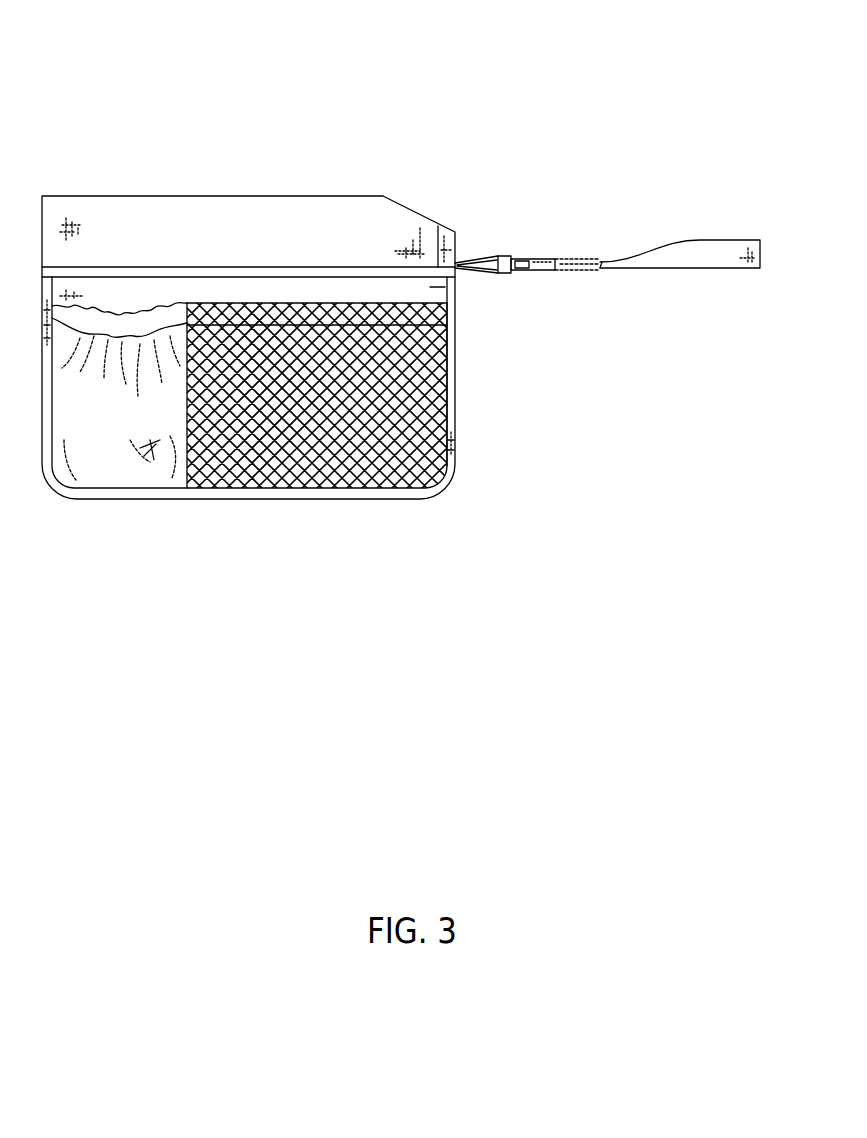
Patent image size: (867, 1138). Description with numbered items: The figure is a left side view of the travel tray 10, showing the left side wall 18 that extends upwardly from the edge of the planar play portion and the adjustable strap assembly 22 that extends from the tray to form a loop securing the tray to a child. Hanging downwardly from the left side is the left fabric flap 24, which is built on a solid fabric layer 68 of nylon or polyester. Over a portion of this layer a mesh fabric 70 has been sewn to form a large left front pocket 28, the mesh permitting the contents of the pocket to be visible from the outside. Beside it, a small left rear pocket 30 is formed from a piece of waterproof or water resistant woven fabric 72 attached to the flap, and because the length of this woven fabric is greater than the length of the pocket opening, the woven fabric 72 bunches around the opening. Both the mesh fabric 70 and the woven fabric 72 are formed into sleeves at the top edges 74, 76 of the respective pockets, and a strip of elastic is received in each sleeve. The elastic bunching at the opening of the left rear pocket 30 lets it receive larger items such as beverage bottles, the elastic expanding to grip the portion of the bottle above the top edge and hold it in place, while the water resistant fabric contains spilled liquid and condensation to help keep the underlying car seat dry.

The travel tray 10 is at (237, 104).
The left side wall 18 is at (218, 244).
The adjustable strap assembly 22 is at (574, 262).
The left fabric flap 24 is at (107, 290).
The left front pocket 28 is at (420, 430).
The left rear pocket 30 is at (62, 408).
The solid fabric layer 68 is at (445, 287).
The mesh fabric 70 is at (315, 478).
The woven fabric 72 is at (122, 460).
The top edge of mesh pocket 74 is at (318, 305).
The top edge of woven fabric pocket 76 is at (148, 307).